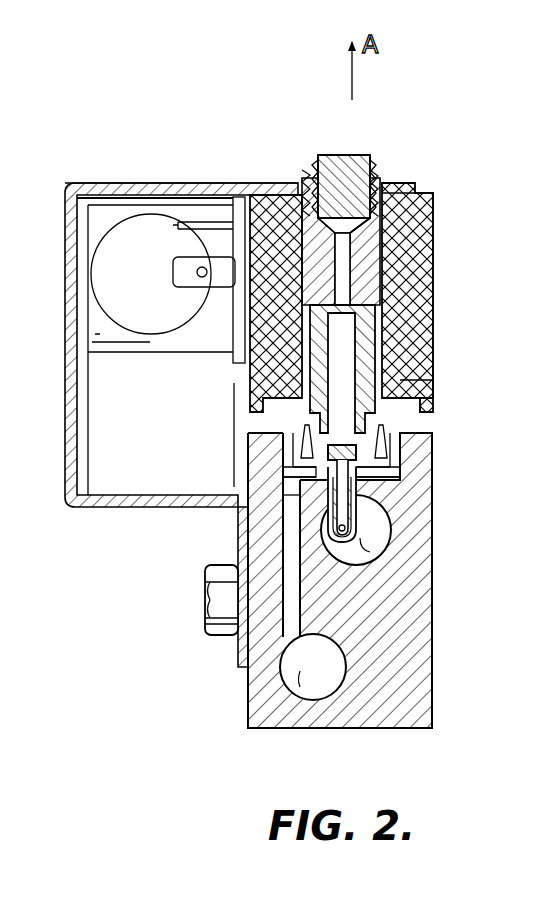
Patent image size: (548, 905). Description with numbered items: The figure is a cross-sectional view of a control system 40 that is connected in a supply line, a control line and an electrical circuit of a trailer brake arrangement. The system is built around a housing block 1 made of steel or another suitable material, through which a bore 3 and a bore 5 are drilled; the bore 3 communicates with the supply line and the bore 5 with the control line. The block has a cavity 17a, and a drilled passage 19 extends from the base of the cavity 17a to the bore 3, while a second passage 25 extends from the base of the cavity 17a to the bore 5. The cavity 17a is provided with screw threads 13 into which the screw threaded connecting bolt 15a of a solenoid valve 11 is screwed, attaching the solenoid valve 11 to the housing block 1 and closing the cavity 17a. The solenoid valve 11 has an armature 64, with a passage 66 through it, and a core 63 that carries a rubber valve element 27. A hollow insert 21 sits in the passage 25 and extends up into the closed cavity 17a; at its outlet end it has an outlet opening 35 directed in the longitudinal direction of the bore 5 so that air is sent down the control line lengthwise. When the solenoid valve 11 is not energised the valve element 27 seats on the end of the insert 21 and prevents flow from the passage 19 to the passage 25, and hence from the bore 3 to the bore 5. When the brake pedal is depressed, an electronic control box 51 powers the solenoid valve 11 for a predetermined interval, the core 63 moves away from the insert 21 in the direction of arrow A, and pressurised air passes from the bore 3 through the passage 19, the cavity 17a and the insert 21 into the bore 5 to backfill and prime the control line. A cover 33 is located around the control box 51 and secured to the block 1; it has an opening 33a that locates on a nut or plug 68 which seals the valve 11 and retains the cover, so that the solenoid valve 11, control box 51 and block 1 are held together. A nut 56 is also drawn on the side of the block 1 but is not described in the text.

The housing block 1 is at (408, 697).
The bore 3 is at (297, 645).
The bore 5 is at (362, 550).
The solenoid valve 11 is at (440, 207).
The screw threads 13 is at (400, 451).
The screw threaded connecting bolt 15a is at (434, 376).
The cavity 17a is at (398, 478).
The drilled passage 19 is at (297, 592).
The hollow insert 21 is at (352, 488).
The second passage 25 is at (293, 500).
The rubber valve element 27 is at (258, 422).
The cover 33 is at (123, 507).
The opening 33a is at (300, 183).
The outlet opening 35 is at (372, 532).
The control system 40 is at (233, 172).
The electronic control box 51 is at (104, 218).
The nut 56 is at (218, 592).
The core 63 is at (365, 342).
The armature 64 is at (370, 253).
The passage 66 is at (345, 283).
The nut or plug 68 is at (367, 153).